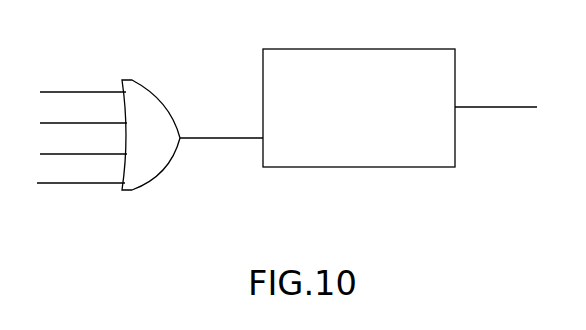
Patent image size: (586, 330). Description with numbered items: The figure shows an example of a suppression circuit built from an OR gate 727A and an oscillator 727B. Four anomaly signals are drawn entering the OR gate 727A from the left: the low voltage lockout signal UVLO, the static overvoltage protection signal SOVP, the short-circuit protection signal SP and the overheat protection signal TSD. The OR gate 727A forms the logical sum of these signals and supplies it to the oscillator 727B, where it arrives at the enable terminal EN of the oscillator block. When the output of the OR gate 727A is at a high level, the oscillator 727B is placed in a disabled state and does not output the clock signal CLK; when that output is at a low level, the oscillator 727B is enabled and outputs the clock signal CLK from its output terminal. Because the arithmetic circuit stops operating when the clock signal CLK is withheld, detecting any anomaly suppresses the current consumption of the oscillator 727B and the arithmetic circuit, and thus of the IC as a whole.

The OR gate 727A is at (127, 80).
The oscillator 727B is at (363, 49).
The low voltage lockout signal UVLO is at (83, 83).
The static overvoltage protection signal SOVP is at (83, 113).
The short-circuit protection signal SP is at (83, 145).
The overheat protection signal TSD is at (80, 173).
The enable input EN is at (236, 138).
The clock signal CLK is at (496, 96).